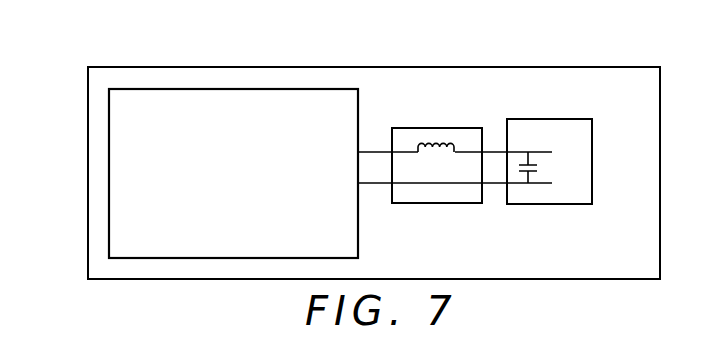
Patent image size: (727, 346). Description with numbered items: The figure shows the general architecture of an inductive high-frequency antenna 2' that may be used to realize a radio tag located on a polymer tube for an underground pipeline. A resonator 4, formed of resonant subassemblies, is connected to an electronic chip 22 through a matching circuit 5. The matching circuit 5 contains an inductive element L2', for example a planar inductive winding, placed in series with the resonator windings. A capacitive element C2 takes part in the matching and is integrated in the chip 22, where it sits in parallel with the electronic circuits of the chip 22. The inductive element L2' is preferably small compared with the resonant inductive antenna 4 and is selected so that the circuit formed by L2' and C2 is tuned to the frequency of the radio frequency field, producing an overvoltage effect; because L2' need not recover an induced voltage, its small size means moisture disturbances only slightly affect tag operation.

The device housing 2' is at (350, 173).
The resonator 4 is at (358, 242).
The matching circuit 5 is at (430, 203).
The electronic chip 22 is at (546, 204).
The inductive element L2' is at (436, 141).
The capacitive element C2 is at (535, 165).